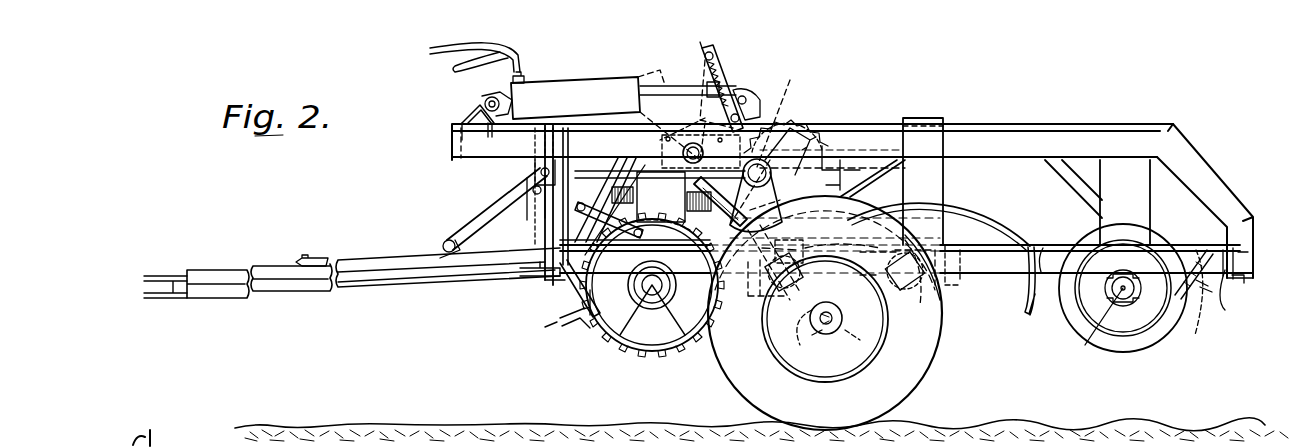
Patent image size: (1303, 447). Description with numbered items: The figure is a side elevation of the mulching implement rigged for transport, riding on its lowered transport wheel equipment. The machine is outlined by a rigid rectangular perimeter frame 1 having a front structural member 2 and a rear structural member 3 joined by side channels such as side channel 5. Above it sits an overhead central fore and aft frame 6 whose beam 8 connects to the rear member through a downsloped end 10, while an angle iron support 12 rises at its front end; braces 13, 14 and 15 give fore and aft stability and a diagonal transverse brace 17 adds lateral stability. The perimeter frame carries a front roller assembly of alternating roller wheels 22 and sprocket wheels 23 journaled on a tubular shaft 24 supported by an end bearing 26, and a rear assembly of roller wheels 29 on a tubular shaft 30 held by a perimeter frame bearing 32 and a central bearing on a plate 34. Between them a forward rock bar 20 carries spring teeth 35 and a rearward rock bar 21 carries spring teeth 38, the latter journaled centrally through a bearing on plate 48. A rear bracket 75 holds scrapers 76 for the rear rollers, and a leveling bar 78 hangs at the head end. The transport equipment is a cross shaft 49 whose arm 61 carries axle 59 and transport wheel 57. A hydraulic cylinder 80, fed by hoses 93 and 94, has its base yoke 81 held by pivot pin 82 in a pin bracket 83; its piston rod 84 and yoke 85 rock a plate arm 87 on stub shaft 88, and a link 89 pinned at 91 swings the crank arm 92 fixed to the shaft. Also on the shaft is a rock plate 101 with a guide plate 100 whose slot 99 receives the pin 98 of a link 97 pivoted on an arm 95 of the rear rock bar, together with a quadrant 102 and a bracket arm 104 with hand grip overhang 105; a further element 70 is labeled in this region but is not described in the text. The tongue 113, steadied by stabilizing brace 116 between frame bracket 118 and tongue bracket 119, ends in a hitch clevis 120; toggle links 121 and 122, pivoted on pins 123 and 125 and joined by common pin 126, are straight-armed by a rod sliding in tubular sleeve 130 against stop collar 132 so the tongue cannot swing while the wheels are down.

The perimeter frame 1 is at (977, 280).
The front structural member 2 is at (559, 282).
The rear structural member 3 is at (1208, 298).
The side channel 5 is at (1047, 247).
The overhead central fore and aft frame 6 is at (1002, 123).
The beam 8 is at (1032, 154).
The downsloped end 10 is at (1205, 163).
The angle iron support 12 is at (560, 224).
The brace 13 is at (602, 167).
The brace 14 is at (866, 176).
The brace 15 is at (1070, 184).
The transverse brace 17 is at (545, 208).
The rock bar 20 is at (777, 301).
The rock bar 21 is at (952, 300).
The roller wheel 22 is at (624, 344).
The sprocket wheel 23 is at (652, 353).
The tubular shaft 24 is at (698, 336).
The end bearing 26 is at (608, 332).
The roller wheel 29 is at (1126, 358).
The tubular shaft 30 is at (1088, 346).
The perimeter frame bearing 32 is at (1146, 310).
The plate 34 is at (1135, 197).
The spring teeth 35 is at (920, 304).
The spring teeth 38 is at (1034, 312).
The plate 48 is at (937, 180).
The cross shaft 49 is at (810, 165).
The transport wheel 57 is at (938, 360).
The axle 59 is at (837, 330).
The arm 61 is at (810, 328).
The link 70 is at (644, 234).
The rear bracket 75 is at (1215, 246).
The scraper 76 is at (1212, 339).
The leveling bar 78 is at (566, 325).
The hydraulic cylinder 80 is at (590, 74).
The base yoke 81 is at (522, 80).
The pivot pin 82 is at (485, 100).
The pin bracket 83 is at (468, 116).
The piston rod 84 is at (651, 85).
The yoke 85 is at (735, 86).
The plate arm 87 is at (697, 114).
The stub shaft 88 is at (648, 125).
The link 89 is at (792, 99).
The pin connection 91 is at (800, 172).
The crank arm 92 is at (839, 156).
The hose 93 is at (455, 50).
The hose 94 is at (460, 68).
The arm 95 is at (929, 235).
The link 97 is at (842, 278).
The pin 98 is at (775, 272).
The slot 99 is at (716, 214).
The guide plate 100 is at (686, 200).
The rock plate 101 is at (782, 132).
The quadrant 102 is at (779, 117).
The bracket arm 104 is at (717, 55).
The hand grip overhang 105 is at (702, 50).
The tongue 113 is at (286, 287).
The stabilizing brace 116 is at (476, 276).
The frame bracket 118 is at (526, 284).
The tongue bracket 119 is at (301, 257).
The hitch clevis 120 is at (152, 276).
The toggle link 121 is at (478, 213).
The toggle link 122 is at (539, 171).
The pin 123 is at (440, 240).
The pin 125 is at (543, 141).
The common pin 126 is at (532, 188).
The tubular sleeve 130 is at (681, 151).
The stop collar 132 is at (644, 164).